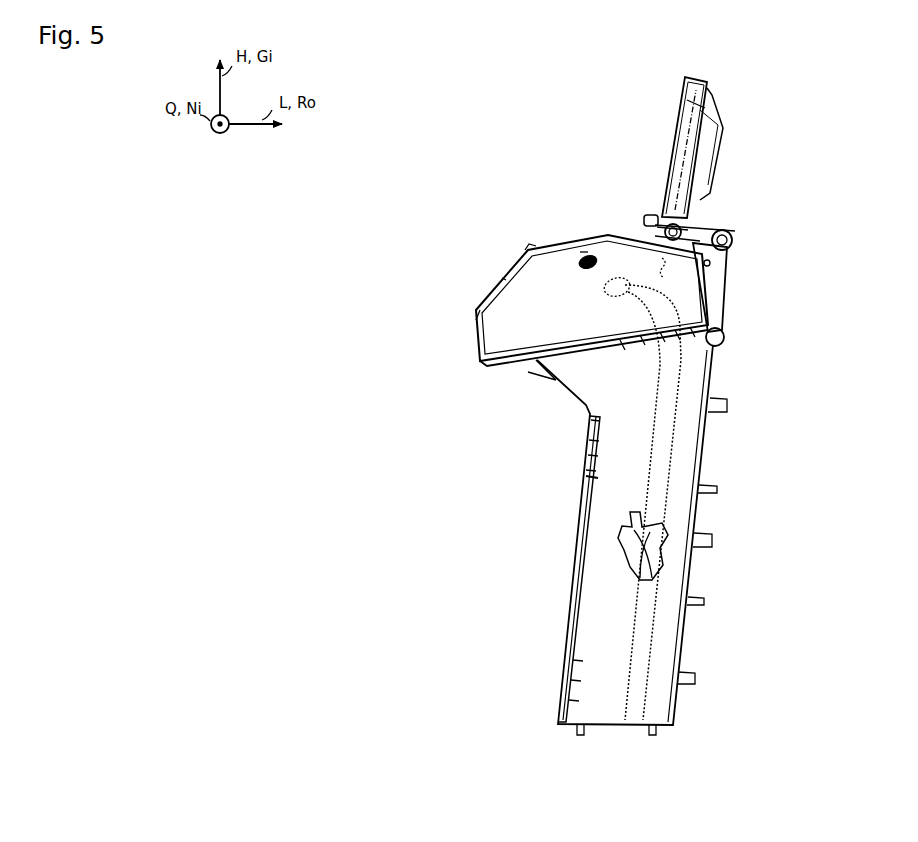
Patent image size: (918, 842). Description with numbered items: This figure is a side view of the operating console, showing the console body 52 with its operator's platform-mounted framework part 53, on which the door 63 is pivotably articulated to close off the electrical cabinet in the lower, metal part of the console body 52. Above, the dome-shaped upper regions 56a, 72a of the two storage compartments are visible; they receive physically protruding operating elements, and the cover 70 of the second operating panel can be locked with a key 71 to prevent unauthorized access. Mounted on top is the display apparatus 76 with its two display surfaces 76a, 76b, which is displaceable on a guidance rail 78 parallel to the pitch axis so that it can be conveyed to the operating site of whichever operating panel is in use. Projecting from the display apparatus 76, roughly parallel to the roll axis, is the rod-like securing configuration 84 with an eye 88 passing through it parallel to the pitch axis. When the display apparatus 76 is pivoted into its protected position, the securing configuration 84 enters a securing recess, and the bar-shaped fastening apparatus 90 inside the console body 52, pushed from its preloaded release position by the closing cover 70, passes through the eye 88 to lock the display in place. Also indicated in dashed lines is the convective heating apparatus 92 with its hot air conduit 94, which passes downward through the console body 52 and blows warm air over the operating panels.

The console body 52 is at (428, 465).
The framework part 53 is at (632, 540).
The door 63 is at (570, 586).
The cover 70 is at (477, 289).
The key 71 is at (598, 264).
The fastening apparatus 90 is at (673, 276).
The convective heating apparatus 92 is at (620, 298).
The hot air conduit 94 is at (666, 371).
The guidance rail 78 is at (698, 226).
The eye 88 is at (643, 219).
The securing configuration 84 is at (650, 206).
The display apparatus 76 is at (705, 124).
The display surface 76a is at (705, 124).
The display surface 76b is at (672, 128).
The upper region 56a is at (545, 307).
The upper region 72a is at (545, 307).